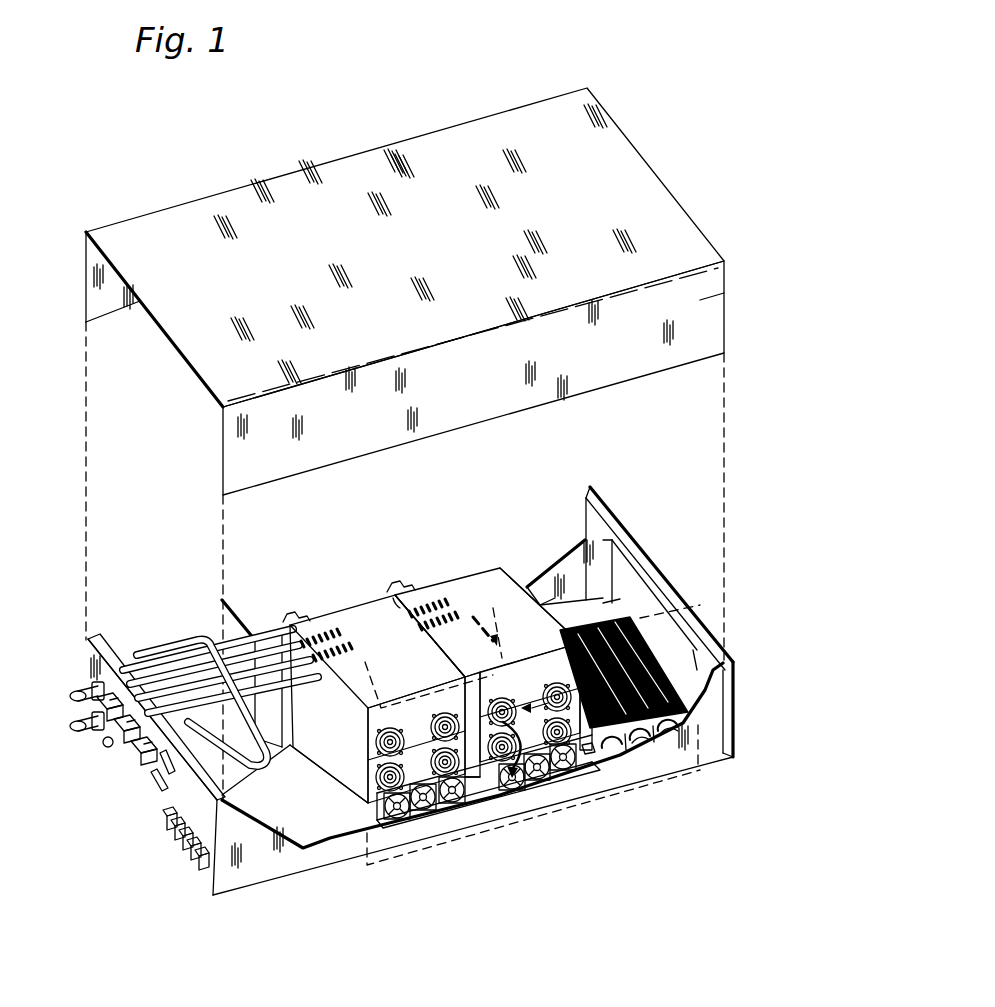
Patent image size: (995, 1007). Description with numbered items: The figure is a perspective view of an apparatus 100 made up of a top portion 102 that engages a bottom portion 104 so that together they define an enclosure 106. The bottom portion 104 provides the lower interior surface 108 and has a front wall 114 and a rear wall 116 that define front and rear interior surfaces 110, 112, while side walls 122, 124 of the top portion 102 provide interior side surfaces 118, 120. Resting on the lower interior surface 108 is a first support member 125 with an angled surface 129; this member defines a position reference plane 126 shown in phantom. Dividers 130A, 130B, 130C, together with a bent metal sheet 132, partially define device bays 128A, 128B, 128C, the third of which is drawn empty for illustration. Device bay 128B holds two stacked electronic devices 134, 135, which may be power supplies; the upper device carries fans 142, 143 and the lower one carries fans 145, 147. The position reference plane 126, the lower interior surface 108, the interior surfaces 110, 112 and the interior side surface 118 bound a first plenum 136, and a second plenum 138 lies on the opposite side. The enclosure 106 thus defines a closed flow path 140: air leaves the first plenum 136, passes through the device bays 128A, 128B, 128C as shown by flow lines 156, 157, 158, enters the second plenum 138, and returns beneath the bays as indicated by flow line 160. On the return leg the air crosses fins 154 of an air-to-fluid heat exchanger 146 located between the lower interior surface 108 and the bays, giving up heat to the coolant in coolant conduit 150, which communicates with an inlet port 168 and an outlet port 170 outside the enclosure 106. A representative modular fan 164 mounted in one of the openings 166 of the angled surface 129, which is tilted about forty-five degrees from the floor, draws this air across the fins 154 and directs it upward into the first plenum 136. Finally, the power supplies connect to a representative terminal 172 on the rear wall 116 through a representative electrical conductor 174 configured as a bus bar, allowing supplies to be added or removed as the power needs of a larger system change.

The apparatus 100 is at (486, 98).
The top portion 102 is at (633, 150).
The bottom portion 104 is at (238, 878).
The enclosure 106 is at (188, 690).
The lower interior surface 108 is at (332, 830).
The front interior surface 110 is at (620, 568).
The rear interior surface 112 is at (158, 805).
The front wall 114 is at (600, 523).
The rear wall 116 is at (105, 655).
The interior side surface 118 is at (693, 302).
The interior side surface 120 is at (105, 300).
The side wall 122 is at (708, 328).
The side wall 124 is at (84, 282).
The first support member 125 is at (547, 775).
The position reference plane 126 is at (407, 636).
The device bay 128A is at (355, 585).
The device bay 128B is at (474, 560).
The device bay 128C is at (648, 612).
The angled surface 129 is at (585, 770).
The divider 130A is at (532, 763).
The divider 130B is at (660, 736).
The divider 130C is at (678, 668).
The bent metal sheet 132 is at (233, 600).
The electronic device 134 is at (398, 592).
The electronic device 135 is at (545, 752).
The first plenum 136 is at (695, 645).
The second plenum 138 is at (578, 556).
The flow path 140 is at (640, 760).
The fan 142 is at (487, 630).
The fan 143 is at (548, 703).
The fan 145 is at (468, 808).
The air-to-fluid heat exchanger 146 is at (518, 568).
The fan 147 is at (598, 768).
The coolant conduit 150 is at (178, 660).
The fins 154 is at (597, 630).
The flow line 156 is at (540, 765).
The flow line 157 is at (525, 742).
The flow line 158 is at (455, 590).
The flow line 160 is at (443, 577).
The fan 164 is at (497, 812).
The openings 166 is at (662, 748).
The inlet port 168 is at (80, 688).
The outlet port 170 is at (83, 732).
The terminal 172 is at (135, 760).
The electrical conductor 174 is at (197, 693).